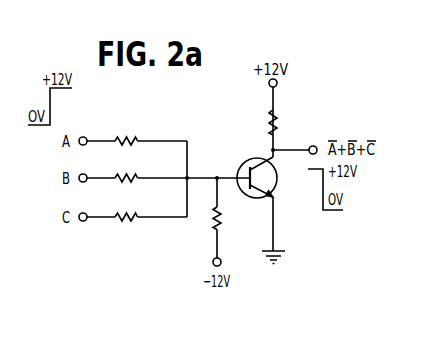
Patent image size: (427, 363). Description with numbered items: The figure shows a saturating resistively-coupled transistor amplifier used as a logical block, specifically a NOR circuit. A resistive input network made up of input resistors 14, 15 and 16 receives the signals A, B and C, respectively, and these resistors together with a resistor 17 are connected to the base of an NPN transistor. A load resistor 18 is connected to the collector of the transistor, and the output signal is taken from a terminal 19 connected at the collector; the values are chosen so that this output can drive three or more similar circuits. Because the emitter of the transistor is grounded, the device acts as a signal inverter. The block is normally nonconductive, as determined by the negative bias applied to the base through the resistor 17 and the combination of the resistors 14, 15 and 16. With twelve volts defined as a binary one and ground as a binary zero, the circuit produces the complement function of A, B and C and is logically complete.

The input resistor 14 is at (118, 139).
The input resistor 15 is at (118, 176).
The input resistor 16 is at (118, 215).
The resistor 17 is at (223, 218).
The load resistor 18 is at (268, 128).
The terminal 19 is at (313, 145).